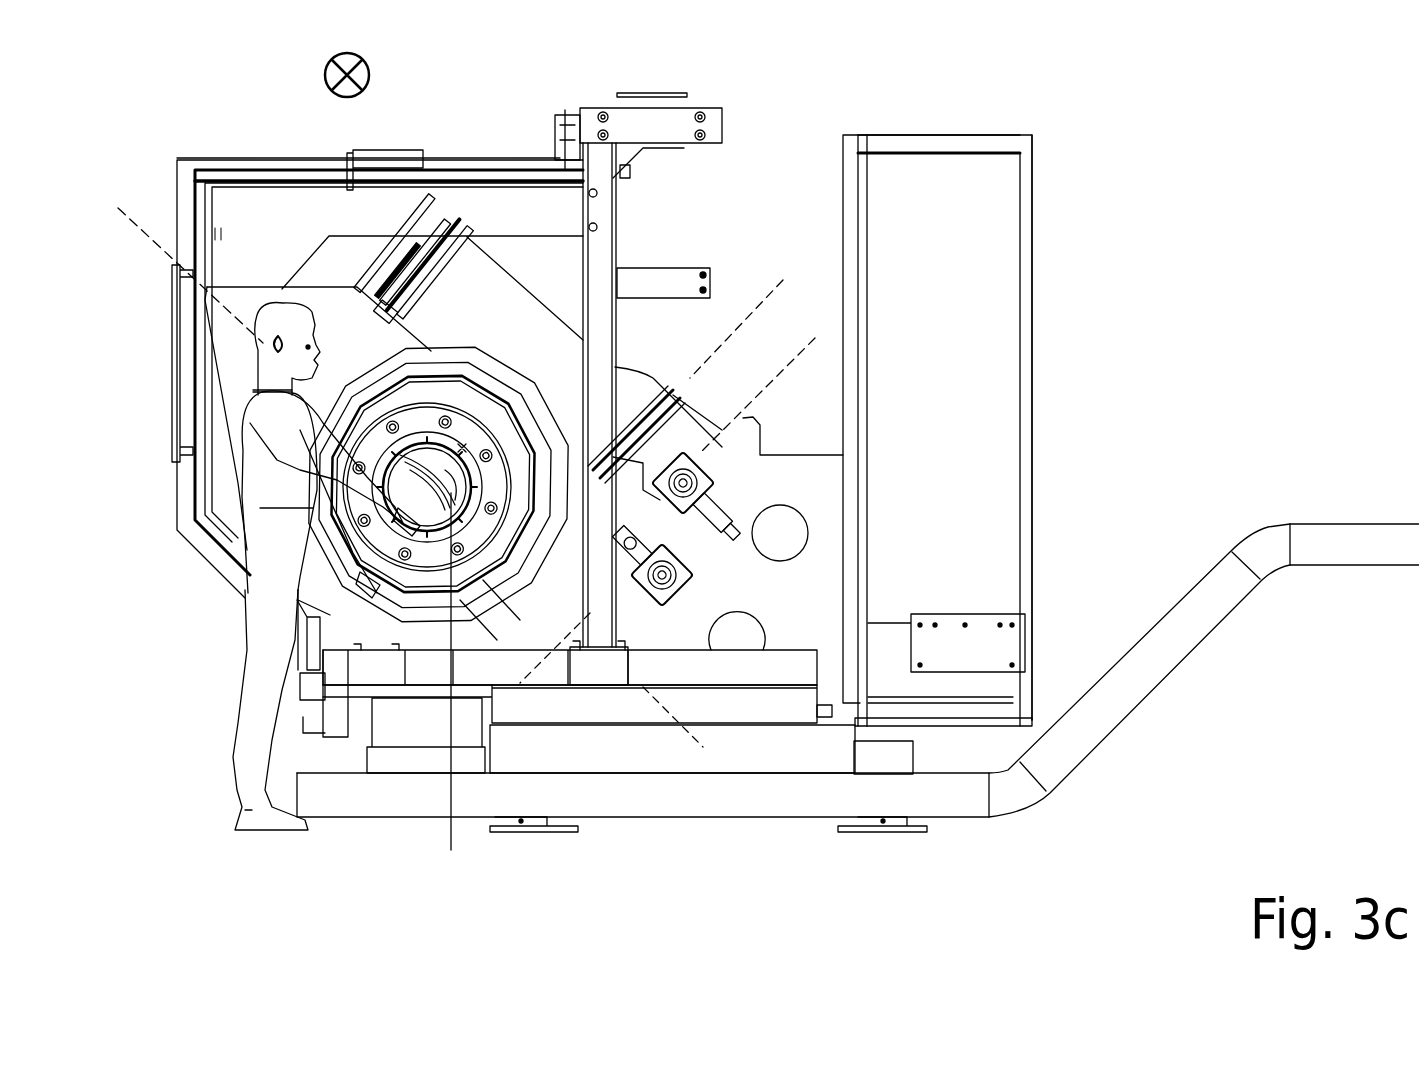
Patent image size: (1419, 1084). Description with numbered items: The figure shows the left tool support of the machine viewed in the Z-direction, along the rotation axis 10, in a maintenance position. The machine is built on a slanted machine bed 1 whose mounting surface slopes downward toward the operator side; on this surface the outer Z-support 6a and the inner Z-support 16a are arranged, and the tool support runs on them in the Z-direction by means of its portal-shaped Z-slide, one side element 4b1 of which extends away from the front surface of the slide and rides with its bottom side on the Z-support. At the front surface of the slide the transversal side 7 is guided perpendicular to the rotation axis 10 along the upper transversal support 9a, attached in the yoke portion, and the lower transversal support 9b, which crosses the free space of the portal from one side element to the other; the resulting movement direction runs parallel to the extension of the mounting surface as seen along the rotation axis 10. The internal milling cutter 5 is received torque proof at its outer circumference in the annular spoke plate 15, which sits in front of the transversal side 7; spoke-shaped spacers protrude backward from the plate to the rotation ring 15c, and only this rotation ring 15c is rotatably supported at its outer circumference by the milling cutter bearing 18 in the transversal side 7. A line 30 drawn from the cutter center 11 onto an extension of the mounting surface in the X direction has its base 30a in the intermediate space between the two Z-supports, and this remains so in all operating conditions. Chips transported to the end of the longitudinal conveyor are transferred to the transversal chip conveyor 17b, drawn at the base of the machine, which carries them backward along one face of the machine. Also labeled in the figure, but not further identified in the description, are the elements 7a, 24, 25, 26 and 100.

The machine bed 1 is at (729, 508).
The internal milling cutter 5 is at (437, 490).
The transversal side 7 is at (395, 293).
The door panel 7a is at (237, 355).
The upper transversal support 9a is at (435, 263).
The lower transversal support 9b is at (673, 395).
The rotation axis 10 is at (462, 448).
The cutter center 11 is at (430, 468).
The annular spoke plate 15 is at (507, 457).
The rotation ring 15c is at (492, 585).
The Z-support 16a is at (693, 547).
The transversal chip conveyor 17b is at (858, 678).
The milling cutter bearing 18 is at (417, 613).
The axis 24 is at (457, 689).
The control cabinet 25 is at (937, 454).
The machine enclosure 26 is at (180, 158).
The line 30 is at (577, 684).
The base of the line 30a is at (572, 617).
The side element 4b1 is at (417, 628).
The Z-support 6a is at (720, 457).
The operator 100 is at (268, 618).